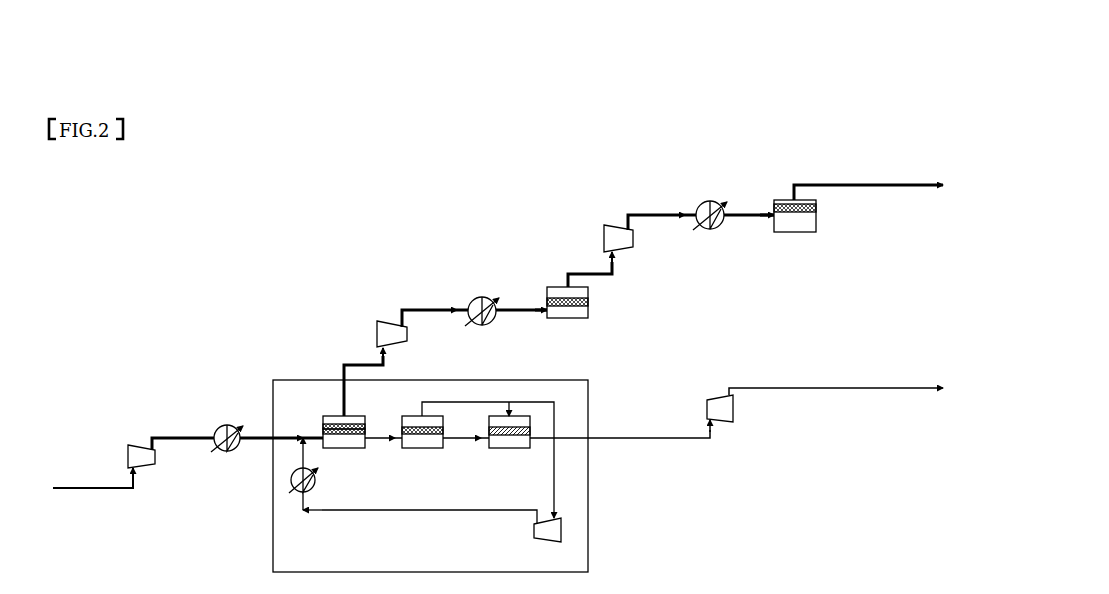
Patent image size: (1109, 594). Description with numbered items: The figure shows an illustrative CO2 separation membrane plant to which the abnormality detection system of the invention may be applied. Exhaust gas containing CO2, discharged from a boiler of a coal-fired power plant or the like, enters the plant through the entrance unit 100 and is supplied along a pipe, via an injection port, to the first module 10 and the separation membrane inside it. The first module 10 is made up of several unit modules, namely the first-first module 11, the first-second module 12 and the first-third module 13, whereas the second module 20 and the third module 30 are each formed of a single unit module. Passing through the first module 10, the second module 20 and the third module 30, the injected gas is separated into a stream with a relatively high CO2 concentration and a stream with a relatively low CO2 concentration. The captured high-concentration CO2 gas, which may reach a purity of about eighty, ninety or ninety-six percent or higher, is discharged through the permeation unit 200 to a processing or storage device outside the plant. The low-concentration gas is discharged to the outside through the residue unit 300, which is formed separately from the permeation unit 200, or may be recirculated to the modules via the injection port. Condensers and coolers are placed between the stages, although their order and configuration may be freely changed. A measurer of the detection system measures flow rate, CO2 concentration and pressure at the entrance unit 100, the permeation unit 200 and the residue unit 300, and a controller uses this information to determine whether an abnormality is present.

The first module 10 is at (460, 460).
The first-first module 11 is at (344, 449).
The first-second module 12 is at (422, 449).
The first-third module 13 is at (509, 449).
The second module 20 is at (568, 312).
The third module 30 is at (795, 222).
The entrance unit 100 is at (93, 498).
The permeation unit 200 is at (868, 202).
The residue unit 300 is at (736, 413).